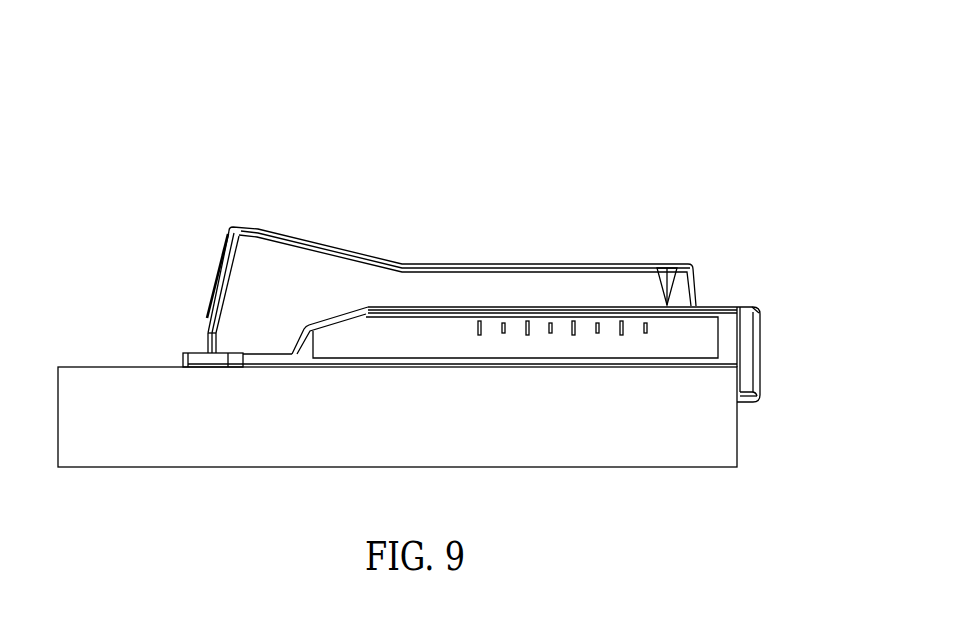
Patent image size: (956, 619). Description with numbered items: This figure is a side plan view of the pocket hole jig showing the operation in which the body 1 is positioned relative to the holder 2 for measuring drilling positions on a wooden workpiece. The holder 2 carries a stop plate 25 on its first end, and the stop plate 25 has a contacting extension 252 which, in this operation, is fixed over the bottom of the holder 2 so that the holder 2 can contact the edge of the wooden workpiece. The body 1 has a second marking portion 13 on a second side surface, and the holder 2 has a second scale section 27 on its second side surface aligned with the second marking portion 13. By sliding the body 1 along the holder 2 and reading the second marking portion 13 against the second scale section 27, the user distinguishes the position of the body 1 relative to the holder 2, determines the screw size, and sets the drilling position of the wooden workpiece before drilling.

The body 1 is at (318, 243).
The holder 2 is at (188, 352).
The second marking portion 13 is at (672, 267).
The stop plate 25 is at (762, 308).
The second scale section 27 is at (576, 320).
The contacting extension 252 is at (760, 400).